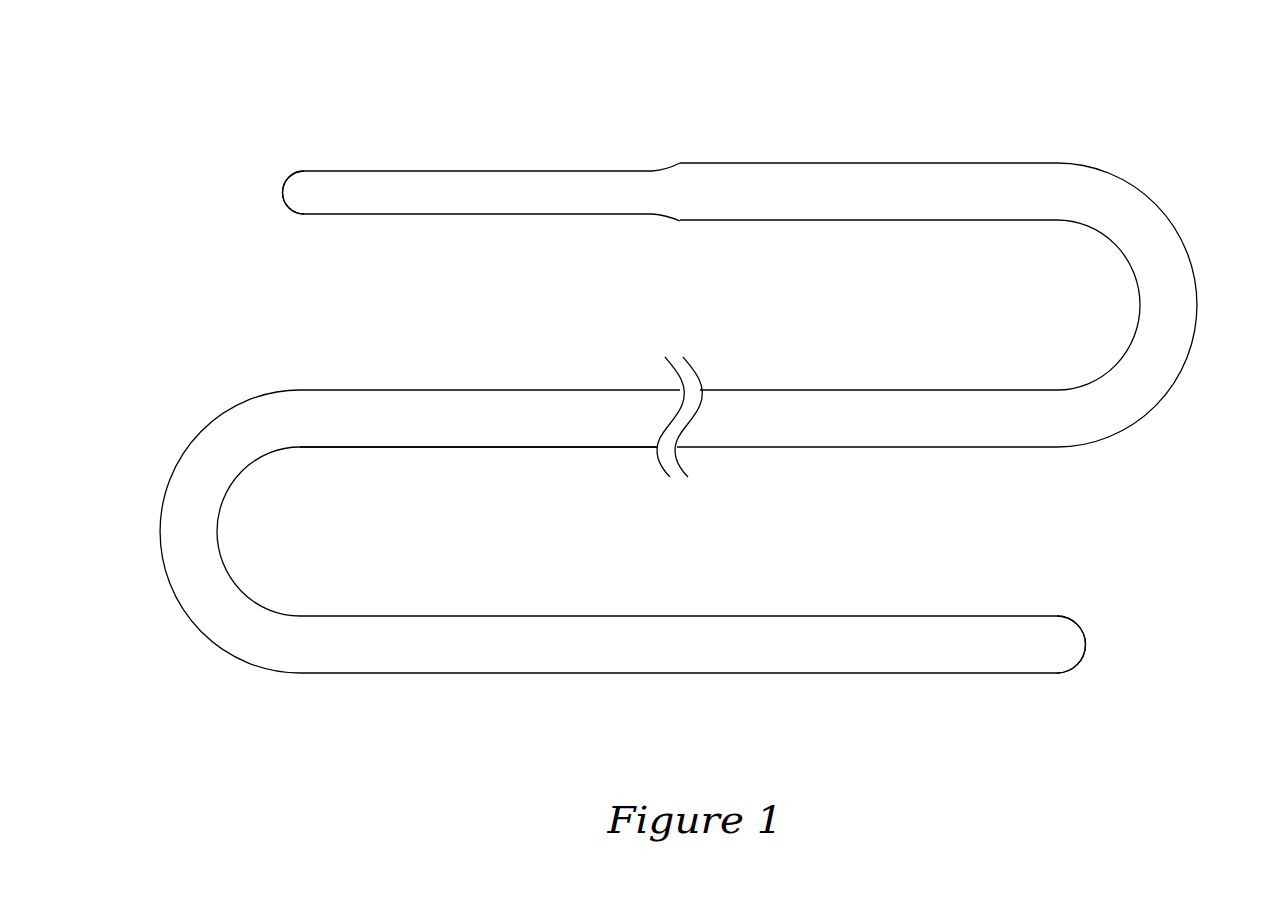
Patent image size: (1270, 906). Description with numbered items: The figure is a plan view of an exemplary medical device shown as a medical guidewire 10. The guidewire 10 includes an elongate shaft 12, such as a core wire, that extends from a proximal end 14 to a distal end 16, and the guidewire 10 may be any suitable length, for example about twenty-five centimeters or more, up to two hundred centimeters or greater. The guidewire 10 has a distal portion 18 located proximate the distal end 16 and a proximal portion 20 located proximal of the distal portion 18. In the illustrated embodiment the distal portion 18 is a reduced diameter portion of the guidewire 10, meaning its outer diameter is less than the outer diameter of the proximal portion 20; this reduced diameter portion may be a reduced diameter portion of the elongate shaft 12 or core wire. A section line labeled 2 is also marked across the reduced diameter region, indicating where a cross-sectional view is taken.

The medical guidewire 10 is at (689, 364).
The elongate shaft 12 is at (466, 447).
The proximal end 14 is at (1079, 604).
The distal end 16 is at (289, 163).
The distal portion 18 is at (552, 146).
The proximal portion 20 is at (563, 368).
The section line 2- 2 is at (453, 248).